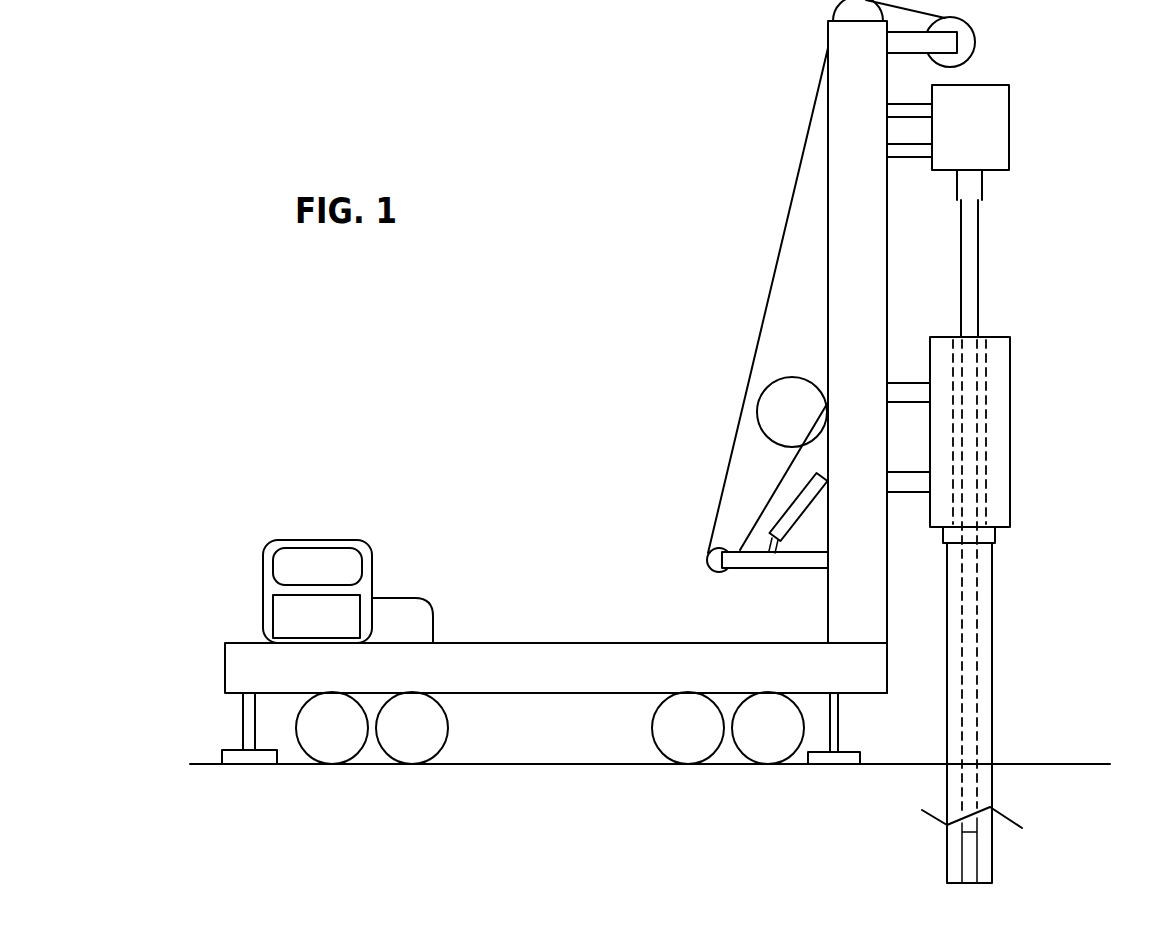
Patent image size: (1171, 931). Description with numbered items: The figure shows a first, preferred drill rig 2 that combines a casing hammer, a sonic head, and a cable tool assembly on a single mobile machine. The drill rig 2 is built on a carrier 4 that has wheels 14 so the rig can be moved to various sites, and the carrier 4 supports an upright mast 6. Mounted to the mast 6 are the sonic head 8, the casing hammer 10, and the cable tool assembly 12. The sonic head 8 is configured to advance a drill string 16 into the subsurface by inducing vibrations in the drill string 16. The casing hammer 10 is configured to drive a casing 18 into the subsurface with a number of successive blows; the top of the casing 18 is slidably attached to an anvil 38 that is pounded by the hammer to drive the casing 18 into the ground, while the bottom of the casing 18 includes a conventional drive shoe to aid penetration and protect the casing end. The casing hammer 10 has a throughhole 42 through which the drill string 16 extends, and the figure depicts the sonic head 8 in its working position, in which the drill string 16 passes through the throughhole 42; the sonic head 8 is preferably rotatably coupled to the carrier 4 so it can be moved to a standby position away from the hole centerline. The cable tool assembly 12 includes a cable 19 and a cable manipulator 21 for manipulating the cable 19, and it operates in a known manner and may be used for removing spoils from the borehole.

The drill rig 2 is at (775, 113).
The carrier 4 is at (605, 643).
The mast 6 is at (887, 292).
The sonic head 8 is at (1009, 120).
The casing hammer 10 is at (1010, 352).
The cable tool assembly 12 is at (757, 568).
The wheels 14 is at (665, 727).
The drill string 16 is at (975, 673).
The casing 18 is at (992, 605).
The cable 19 is at (778, 255).
The cable manipulator 21 is at (808, 484).
The anvil 38 is at (995, 536).
The throughhole 42 is at (983, 416).